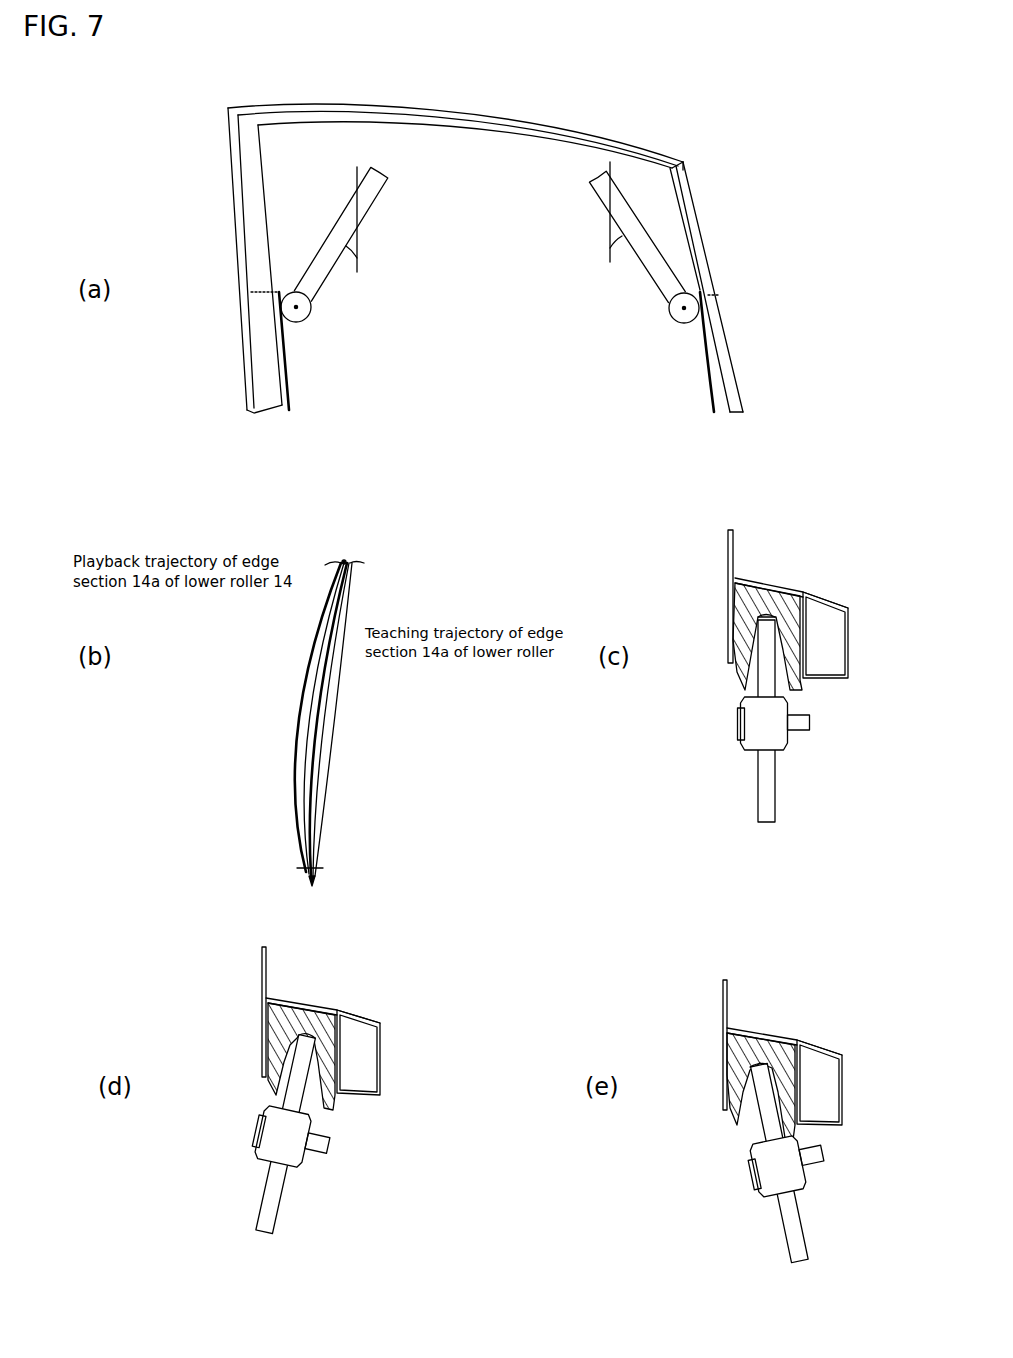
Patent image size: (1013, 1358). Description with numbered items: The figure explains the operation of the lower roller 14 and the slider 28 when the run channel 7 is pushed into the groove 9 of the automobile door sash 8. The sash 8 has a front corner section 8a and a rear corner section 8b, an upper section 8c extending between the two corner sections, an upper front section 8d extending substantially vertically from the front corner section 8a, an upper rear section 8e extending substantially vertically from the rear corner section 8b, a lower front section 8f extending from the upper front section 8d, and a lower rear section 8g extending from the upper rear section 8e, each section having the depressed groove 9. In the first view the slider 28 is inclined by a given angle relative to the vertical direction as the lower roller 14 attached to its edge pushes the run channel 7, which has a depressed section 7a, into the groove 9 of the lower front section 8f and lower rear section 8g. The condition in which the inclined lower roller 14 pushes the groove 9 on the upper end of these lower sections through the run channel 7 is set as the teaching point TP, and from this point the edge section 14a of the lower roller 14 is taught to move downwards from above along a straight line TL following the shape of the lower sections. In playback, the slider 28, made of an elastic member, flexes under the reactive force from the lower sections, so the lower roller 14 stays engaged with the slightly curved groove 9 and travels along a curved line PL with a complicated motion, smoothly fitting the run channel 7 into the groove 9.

The run channel 7 is at (288, 360).
The depressed section 7a is at (800, 602).
The automobile door sash 8 is at (493, 112).
The front corner section 8a is at (686, 160).
The rear corner section 8b is at (262, 128).
The upper section 8c is at (415, 112).
The upper front section 8d is at (706, 240).
The upper rear section 8e is at (246, 228).
The lower front section 8f is at (727, 352).
The lower rear section 8g is at (256, 331).
The groove 9 is at (304, 738).
The lower roller 14 is at (312, 310).
The edge section 14a is at (766, 622).
The slider 28 is at (369, 204).
The teaching point TP is at (346, 560).
The curved line PL is at (295, 622).
The straight line TL is at (333, 683).